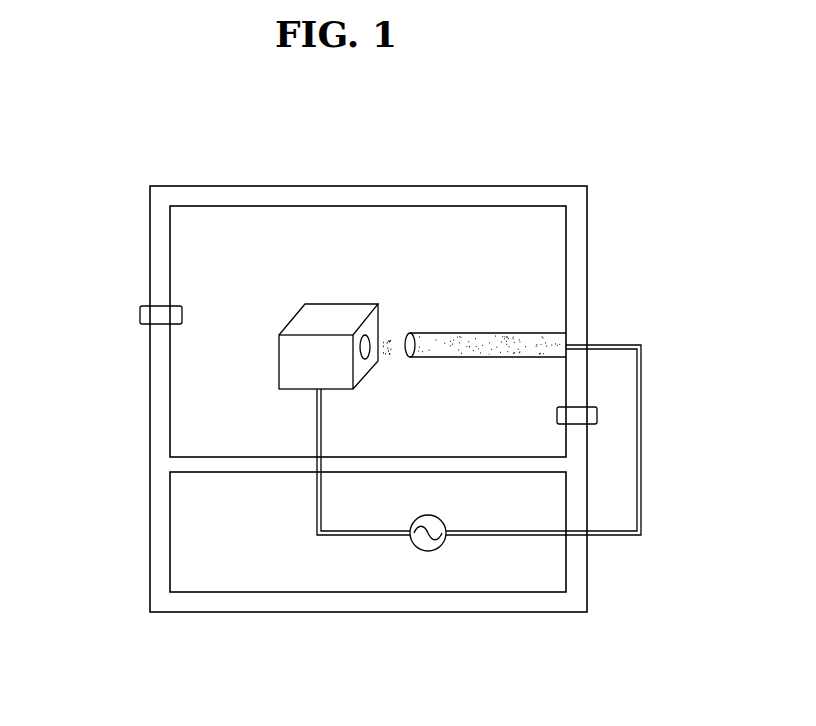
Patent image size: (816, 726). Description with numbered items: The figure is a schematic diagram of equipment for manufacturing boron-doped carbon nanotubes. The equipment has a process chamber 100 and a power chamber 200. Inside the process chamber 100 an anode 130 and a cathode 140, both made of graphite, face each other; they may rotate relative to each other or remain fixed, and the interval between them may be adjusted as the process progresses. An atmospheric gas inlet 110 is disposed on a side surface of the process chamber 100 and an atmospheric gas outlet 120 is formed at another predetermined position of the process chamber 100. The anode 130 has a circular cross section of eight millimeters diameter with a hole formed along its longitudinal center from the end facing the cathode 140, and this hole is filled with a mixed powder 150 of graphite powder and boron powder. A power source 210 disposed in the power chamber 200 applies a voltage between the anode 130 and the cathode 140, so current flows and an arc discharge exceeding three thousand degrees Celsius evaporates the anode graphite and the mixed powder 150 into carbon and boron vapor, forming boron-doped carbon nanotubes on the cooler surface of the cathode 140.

The process chamber 100 is at (527, 220).
The atmospheric gas inlet 110 is at (140, 312).
The atmospheric gas outlet 120 is at (597, 413).
The anode 130 is at (560, 338).
The cathode 140 is at (289, 380).
The mixed powder 150 is at (447, 340).
The power chamber 200 is at (520, 582).
The power source 210 is at (428, 546).